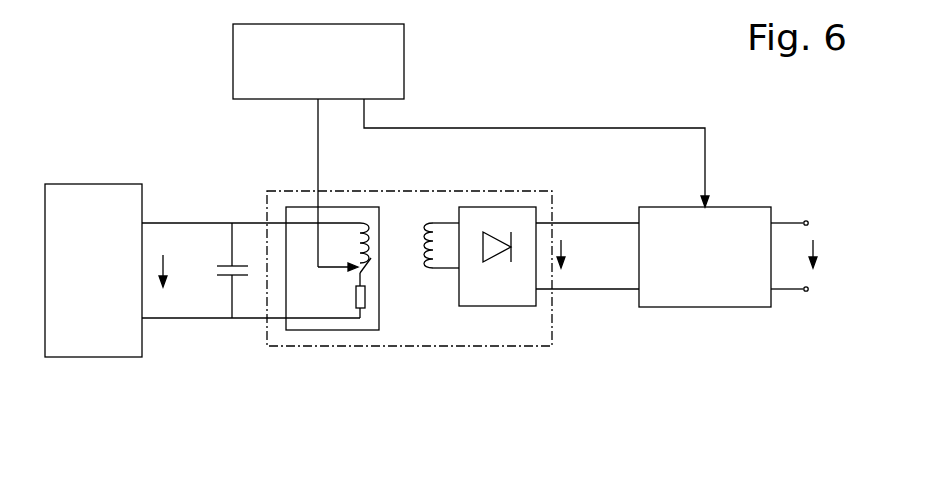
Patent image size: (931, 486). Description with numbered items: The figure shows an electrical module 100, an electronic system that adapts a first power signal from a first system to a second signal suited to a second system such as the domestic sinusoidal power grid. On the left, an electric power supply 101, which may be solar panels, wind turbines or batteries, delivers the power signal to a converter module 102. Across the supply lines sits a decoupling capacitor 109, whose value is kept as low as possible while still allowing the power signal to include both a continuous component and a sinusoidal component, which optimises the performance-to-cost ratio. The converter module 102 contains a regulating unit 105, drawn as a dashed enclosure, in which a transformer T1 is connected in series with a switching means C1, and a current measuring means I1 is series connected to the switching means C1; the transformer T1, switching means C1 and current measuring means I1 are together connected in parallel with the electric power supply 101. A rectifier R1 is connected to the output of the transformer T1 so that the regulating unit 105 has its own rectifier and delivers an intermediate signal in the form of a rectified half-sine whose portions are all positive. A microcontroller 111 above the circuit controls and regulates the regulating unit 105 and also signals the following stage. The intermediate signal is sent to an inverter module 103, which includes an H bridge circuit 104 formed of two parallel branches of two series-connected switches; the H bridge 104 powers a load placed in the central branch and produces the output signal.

The electrical module 100 is at (118, 425).
The electric power supply 101 is at (93, 270).
The converter module 102 is at (251, 186).
The inverter module 103 is at (730, 191).
The H bridge circuit 104 is at (705, 257).
The regulating unit 105 is at (545, 340).
The decoupling capacitor 109 is at (241, 296).
The microcontroller 111 is at (471, 147).
The transformer T1 is at (378, 207).
The rectifier R1 is at (487, 215).
The switching means C1 is at (363, 272).
The current measuring means I1 is at (365, 297).